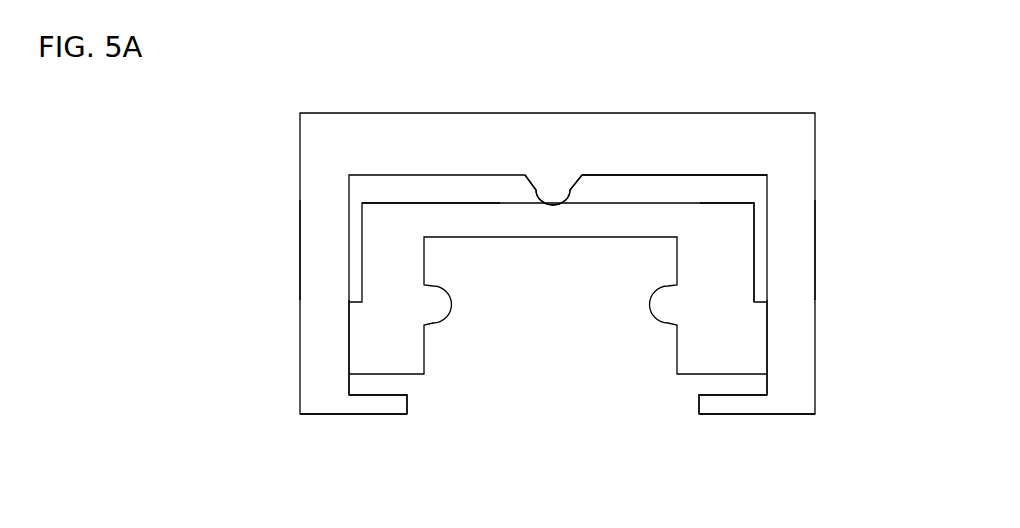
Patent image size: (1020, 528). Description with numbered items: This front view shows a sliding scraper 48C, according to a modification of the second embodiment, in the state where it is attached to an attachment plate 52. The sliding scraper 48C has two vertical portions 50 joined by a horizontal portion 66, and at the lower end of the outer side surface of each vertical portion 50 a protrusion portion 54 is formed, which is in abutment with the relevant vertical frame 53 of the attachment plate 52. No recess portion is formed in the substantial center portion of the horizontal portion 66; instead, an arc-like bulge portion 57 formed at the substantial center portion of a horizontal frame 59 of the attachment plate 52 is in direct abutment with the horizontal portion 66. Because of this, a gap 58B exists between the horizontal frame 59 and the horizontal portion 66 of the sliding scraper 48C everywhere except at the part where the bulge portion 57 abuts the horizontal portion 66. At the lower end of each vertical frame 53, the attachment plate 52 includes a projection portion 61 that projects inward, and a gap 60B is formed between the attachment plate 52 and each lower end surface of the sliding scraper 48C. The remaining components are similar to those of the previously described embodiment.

The sliding scraper 48C is at (715, 203).
The vertical portion 50 is at (412, 358).
The attachment plate 52 is at (818, 180).
The vertical frame 53 is at (325, 253).
The protrusion portion 54 is at (348, 340).
The bulge portion 57 is at (556, 180).
The gap 58B is at (673, 190).
The horizontal frame 59 is at (610, 142).
The gap 60B is at (367, 387).
The projection portion 61 is at (396, 405).
The horizontal portion 66 is at (408, 217).